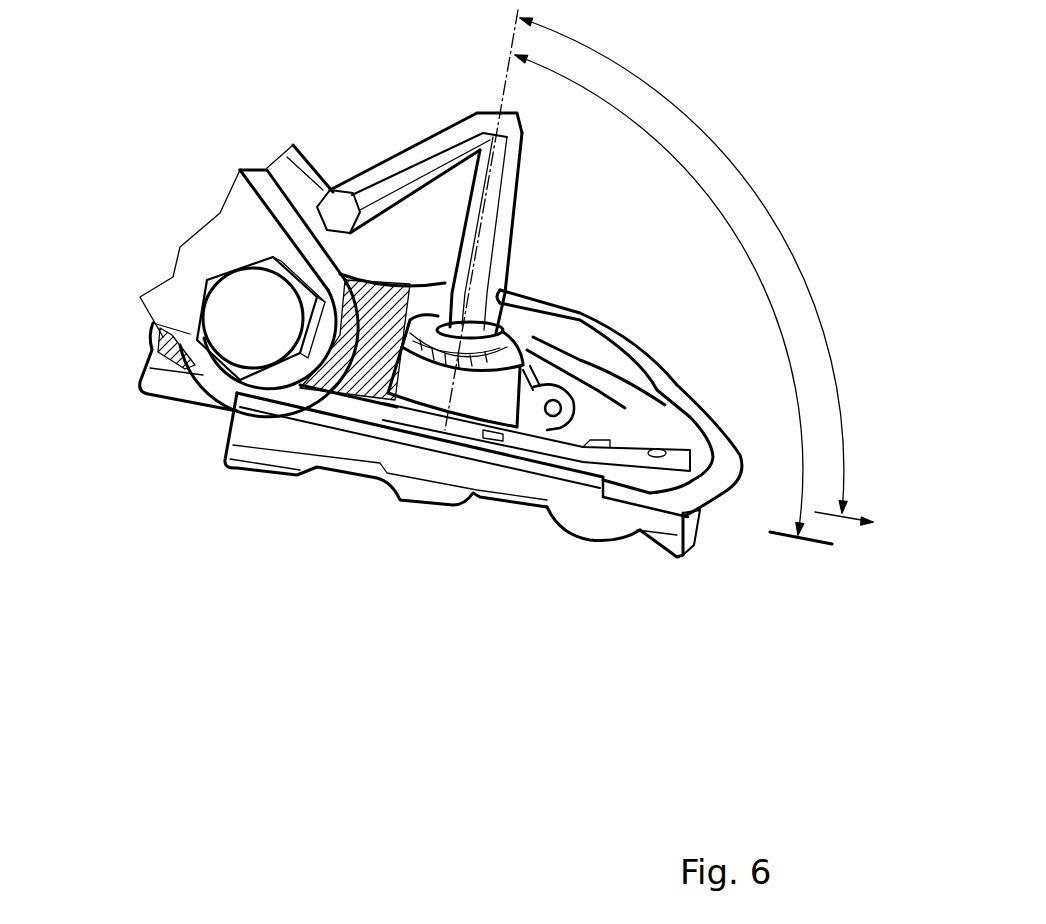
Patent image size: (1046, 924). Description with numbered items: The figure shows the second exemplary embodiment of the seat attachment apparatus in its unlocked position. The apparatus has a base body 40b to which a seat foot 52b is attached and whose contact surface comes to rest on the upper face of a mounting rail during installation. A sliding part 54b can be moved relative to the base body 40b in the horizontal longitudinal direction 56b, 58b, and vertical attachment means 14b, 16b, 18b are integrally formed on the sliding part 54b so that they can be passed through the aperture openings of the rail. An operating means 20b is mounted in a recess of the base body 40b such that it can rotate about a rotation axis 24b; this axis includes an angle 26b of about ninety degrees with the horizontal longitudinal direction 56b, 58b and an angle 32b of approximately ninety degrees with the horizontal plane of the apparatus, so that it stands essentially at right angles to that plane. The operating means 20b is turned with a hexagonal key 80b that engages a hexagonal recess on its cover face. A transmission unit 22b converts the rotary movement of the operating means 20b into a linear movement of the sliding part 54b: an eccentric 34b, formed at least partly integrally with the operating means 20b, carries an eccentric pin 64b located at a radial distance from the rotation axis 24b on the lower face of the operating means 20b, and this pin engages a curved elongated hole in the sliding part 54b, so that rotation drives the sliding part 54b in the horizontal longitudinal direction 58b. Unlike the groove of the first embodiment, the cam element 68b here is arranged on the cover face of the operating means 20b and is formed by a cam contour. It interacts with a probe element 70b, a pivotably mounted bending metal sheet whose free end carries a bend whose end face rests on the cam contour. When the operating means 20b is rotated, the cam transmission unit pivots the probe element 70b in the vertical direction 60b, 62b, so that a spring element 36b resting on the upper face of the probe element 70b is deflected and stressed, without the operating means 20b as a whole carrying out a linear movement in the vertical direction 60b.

The vertical attachment means 14b is at (263, 473).
The vertical attachment means 16b is at (440, 517).
The vertical attachment means 18b is at (615, 540).
The operating means 20b is at (400, 274).
The transmission unit 22b is at (412, 417).
The rotation axis 24b is at (507, 87).
The angle 26b is at (750, 177).
The angle 32b is at (802, 437).
The eccentric 34b is at (519, 450).
The spring element 36b is at (675, 386).
The base body 40b is at (284, 158).
The seat foot 52b is at (235, 240).
The sliding part 54b is at (587, 547).
The horizontal longitudinal direction 56b is at (850, 521).
The horizontal longitudinal direction 58b is at (78, 410).
The vertical direction 60b is at (423, 347).
The vertical direction 62b is at (420, 523).
The eccentric pin 64b is at (497, 500).
The cam element 68b is at (512, 350).
The probe element 70b is at (560, 370).
The hexagonal key 80b is at (510, 232).